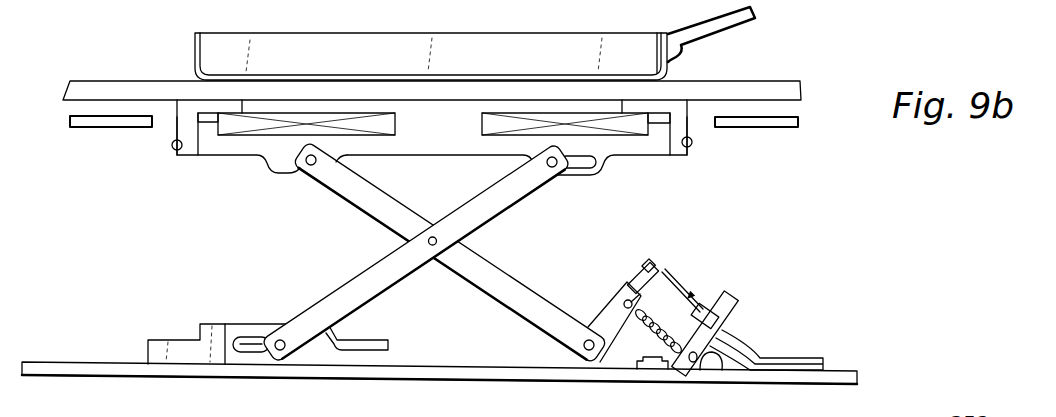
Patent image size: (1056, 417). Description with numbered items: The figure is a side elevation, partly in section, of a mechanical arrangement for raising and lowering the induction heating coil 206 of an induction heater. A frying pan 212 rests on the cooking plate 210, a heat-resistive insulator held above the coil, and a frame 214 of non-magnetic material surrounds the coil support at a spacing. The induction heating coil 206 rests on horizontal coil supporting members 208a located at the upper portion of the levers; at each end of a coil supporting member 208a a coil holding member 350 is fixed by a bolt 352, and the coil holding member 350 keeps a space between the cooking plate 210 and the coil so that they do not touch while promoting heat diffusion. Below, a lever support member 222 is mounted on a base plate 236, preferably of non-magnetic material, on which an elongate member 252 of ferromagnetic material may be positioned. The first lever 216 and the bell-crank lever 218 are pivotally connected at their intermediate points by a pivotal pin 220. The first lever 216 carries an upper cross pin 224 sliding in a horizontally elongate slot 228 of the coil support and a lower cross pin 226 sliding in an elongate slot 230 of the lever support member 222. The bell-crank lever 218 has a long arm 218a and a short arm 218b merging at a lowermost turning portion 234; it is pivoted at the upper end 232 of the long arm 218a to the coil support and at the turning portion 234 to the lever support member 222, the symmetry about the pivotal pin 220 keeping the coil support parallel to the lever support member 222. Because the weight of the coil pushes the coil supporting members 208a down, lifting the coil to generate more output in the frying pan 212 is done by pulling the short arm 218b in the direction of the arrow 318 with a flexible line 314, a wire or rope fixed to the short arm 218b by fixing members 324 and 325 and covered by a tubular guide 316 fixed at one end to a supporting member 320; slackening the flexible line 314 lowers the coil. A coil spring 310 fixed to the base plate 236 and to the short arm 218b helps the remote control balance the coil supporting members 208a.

The cooking plate 210 is at (92, 80).
The frying pan 212 is at (394, 33).
The frame 214 is at (88, 128).
The induction heating coil 206 is at (396, 120).
The coil supporting member 208a is at (232, 156).
The coil holding member 350 is at (177, 117).
The bolt 352 is at (172, 146).
The base plate 236 is at (317, 377).
The elongate member 252 is at (168, 338).
The lever support member 222 is at (425, 350).
The cross pin 226 is at (297, 328).
The elongate slot 228 is at (600, 170).
The first lever 216 is at (494, 208).
The long arm 218a is at (392, 210).
The upper end of long arm 232 is at (304, 172).
The cross pin 224 is at (553, 168).
The pivotal pin 220 is at (433, 236).
The elongate slot 230 is at (253, 337).
The bell-crank lever 218 is at (559, 352).
The short arm 218b is at (609, 307).
The fixing member 324 is at (660, 265).
The fixing member 325 is at (640, 268).
The flexible line 314 is at (665, 284).
The lowermost turning portion 234 is at (612, 370).
The supporting member 320 is at (748, 290).
The coil spring 310 is at (708, 360).
The tubular guide 316 is at (753, 345).
The arrow 318 is at (690, 296).